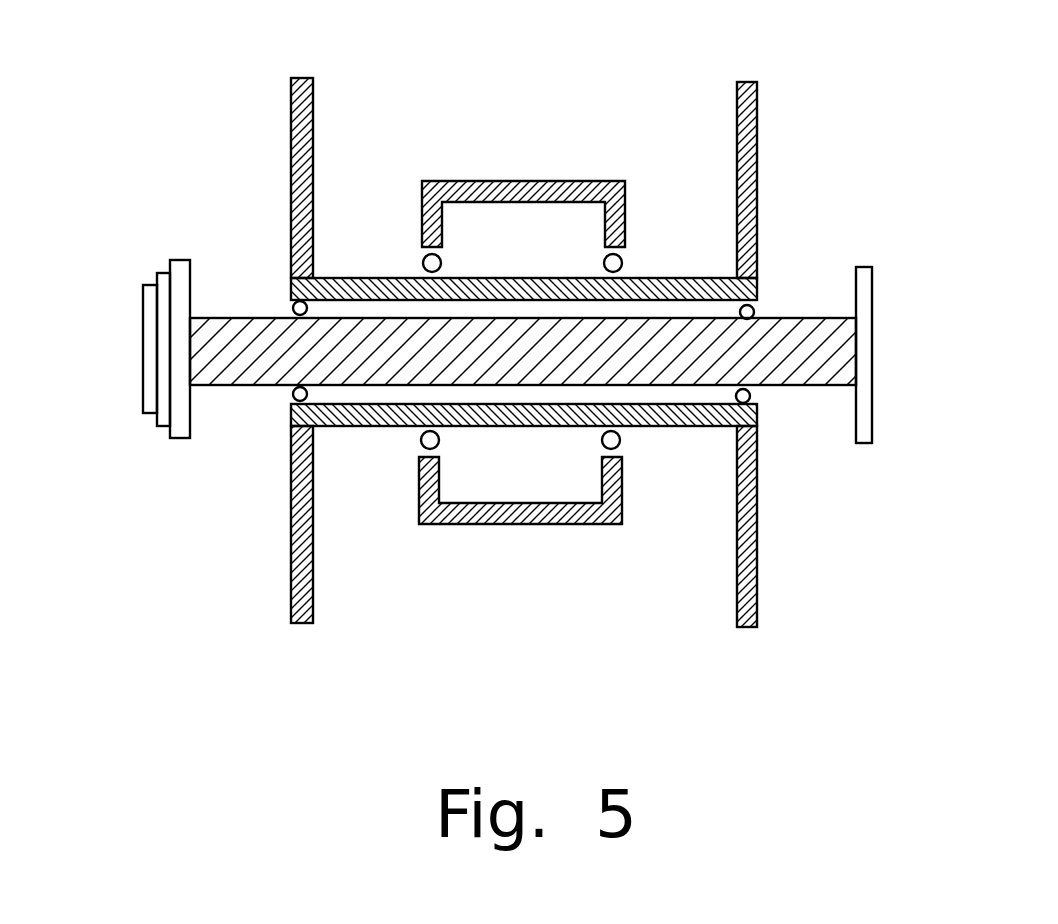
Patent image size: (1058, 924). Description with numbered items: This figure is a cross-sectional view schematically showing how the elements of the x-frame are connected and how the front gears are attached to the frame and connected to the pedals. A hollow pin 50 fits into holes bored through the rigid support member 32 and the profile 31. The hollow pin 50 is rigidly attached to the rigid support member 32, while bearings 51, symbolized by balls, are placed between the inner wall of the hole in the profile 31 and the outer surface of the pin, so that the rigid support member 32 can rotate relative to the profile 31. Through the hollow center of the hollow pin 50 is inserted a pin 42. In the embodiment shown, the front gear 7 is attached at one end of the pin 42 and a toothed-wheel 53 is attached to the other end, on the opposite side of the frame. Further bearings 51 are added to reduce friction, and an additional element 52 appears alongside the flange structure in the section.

The front gear 7 is at (145, 383).
The profile 31 is at (575, 180).
The rigid support member 32 is at (290, 150).
The pin 42 is at (233, 318).
The hollow pin 50 is at (758, 287).
The bearings 51 is at (292, 305).
The lower flange 52 is at (792, 390).
The toothed-wheel 53 is at (871, 340).